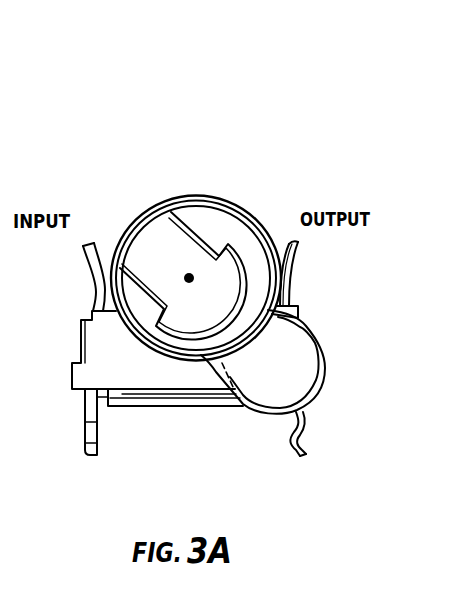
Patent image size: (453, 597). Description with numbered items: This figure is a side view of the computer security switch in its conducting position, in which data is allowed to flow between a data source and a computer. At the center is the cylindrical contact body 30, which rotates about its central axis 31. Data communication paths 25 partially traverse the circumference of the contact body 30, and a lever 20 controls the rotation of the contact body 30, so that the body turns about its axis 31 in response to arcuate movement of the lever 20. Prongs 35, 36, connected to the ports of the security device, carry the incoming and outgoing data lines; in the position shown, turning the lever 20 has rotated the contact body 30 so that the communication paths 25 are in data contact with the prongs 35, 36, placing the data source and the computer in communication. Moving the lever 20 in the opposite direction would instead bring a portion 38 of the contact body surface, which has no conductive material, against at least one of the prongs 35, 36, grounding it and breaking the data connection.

The lever 20 is at (183, 276).
The data communication paths 25 is at (248, 216).
The contact body 30 is at (184, 343).
The central axis 31 is at (191, 266).
The prong 35 is at (85, 244).
The prong 36 is at (298, 246).
The portion of the surface of the contact body 38 is at (140, 325).